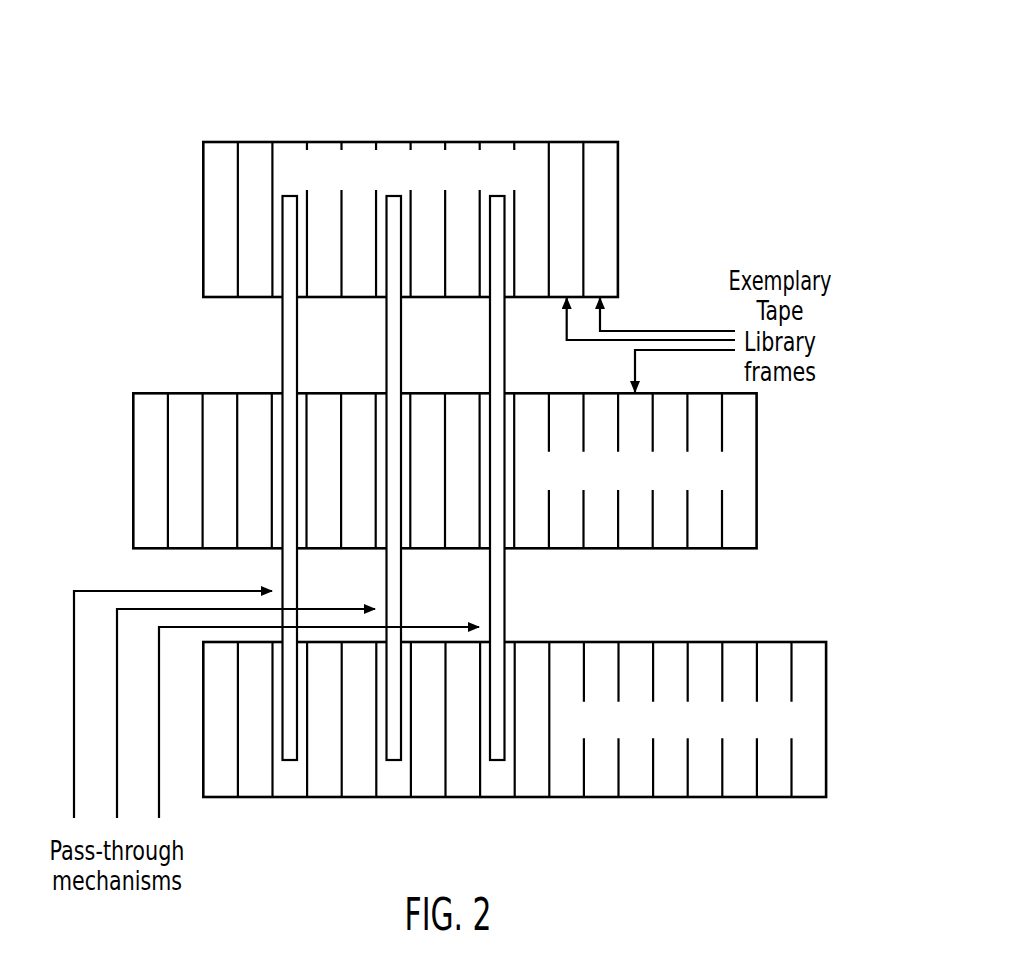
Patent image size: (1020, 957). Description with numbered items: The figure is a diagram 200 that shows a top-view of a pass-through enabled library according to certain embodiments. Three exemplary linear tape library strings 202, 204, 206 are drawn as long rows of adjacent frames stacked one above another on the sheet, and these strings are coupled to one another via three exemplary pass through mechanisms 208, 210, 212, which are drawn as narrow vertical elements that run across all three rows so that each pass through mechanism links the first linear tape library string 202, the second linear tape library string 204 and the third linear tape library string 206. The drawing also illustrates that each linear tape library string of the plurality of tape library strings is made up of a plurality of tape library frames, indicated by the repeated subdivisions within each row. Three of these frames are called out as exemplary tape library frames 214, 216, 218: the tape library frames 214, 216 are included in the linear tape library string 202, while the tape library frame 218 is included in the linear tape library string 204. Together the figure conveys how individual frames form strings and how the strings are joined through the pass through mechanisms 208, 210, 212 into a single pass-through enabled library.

The diagram 200 is at (580, 96).
The linear tape library string 202 is at (463, 140).
The linear tape library string 204 is at (533, 391).
The linear tape library string 206 is at (600, 640).
The pass through mechanism 208 is at (290, 350).
The pass through mechanism 210 is at (393, 350).
The pass through mechanism 212 is at (495, 350).
The tape library frame 214 is at (611, 298).
The tape library frame 216 is at (561, 299).
The tape library frame 218 is at (642, 392).